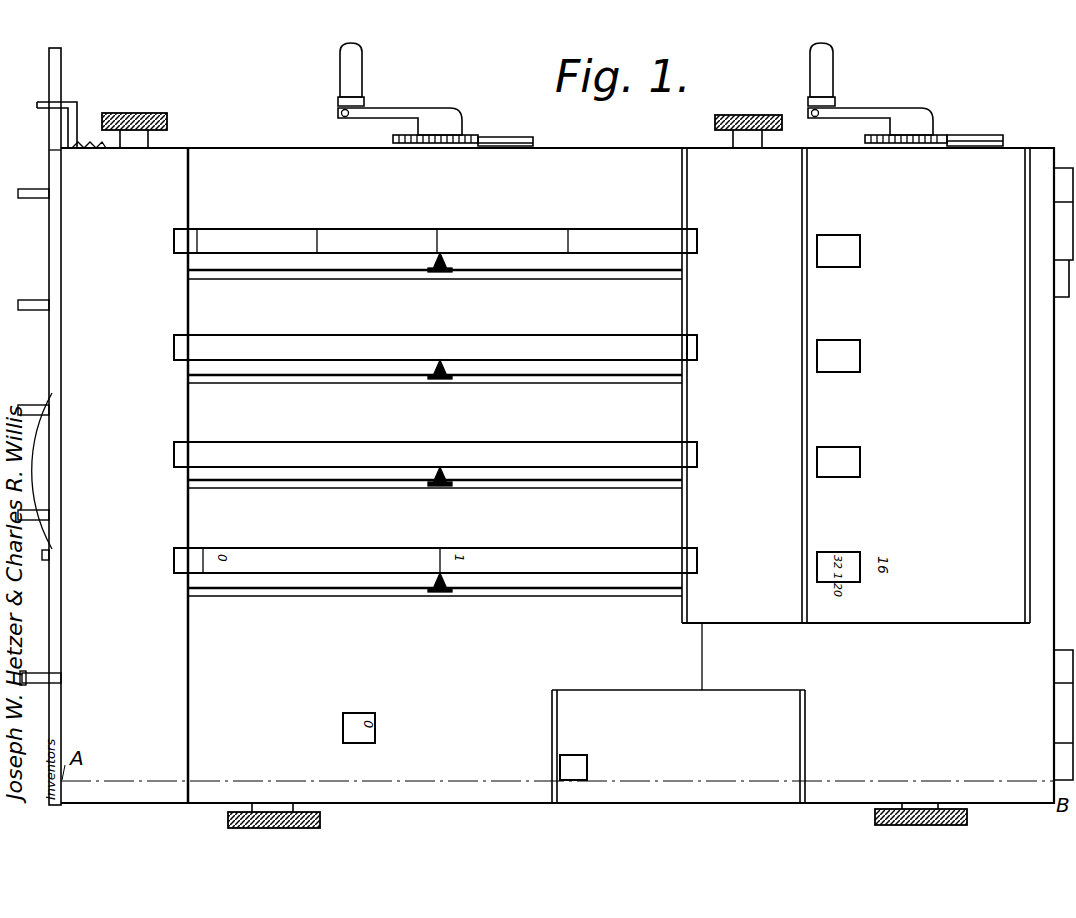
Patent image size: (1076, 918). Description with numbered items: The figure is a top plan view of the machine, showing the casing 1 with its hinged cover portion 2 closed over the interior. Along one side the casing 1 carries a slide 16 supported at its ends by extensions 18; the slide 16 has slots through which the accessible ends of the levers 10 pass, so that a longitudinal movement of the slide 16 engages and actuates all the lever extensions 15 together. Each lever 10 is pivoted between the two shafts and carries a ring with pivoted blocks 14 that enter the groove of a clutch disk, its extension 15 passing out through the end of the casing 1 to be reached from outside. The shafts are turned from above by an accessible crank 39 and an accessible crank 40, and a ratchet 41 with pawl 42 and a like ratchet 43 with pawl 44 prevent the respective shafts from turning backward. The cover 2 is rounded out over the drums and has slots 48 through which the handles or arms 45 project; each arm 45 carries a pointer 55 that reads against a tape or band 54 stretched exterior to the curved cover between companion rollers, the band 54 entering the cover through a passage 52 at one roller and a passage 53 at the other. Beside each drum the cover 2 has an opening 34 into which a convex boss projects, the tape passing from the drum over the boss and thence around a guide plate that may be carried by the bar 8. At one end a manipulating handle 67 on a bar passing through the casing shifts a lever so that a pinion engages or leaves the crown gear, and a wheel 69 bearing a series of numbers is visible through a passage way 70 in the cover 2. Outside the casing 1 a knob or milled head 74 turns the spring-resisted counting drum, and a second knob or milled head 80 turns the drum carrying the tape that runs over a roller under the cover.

The casing 1 is at (278, 147).
The cover portion 2 is at (152, 157).
The bar 8 is at (860, 252).
The lever 10 is at (855, 356).
The blocks 14 is at (854, 462).
The extension 15 is at (25, 193).
The slide 16 is at (50, 323).
The extensions 18 is at (64, 70).
The opening 34 is at (862, 460).
The crank 39 is at (400, 89).
The crank 40 is at (848, 110).
The ratchet 41 is at (447, 136).
The pawl 42 is at (497, 140).
The ratchet 43 is at (910, 135).
The pawl 44 is at (968, 140).
The handle or arm 45 is at (440, 490).
The slots 48 is at (548, 370).
The passage 52 is at (174, 350).
The passage 53 is at (698, 345).
The tape or band 54 is at (176, 243).
The pointer 55 is at (445, 252).
The manipulating handle 67 is at (30, 672).
The wheel 69 is at (590, 770).
The passage way 70 is at (568, 757).
The knob or milled head 74 is at (321, 821).
The knob or milled head 80 is at (942, 806).